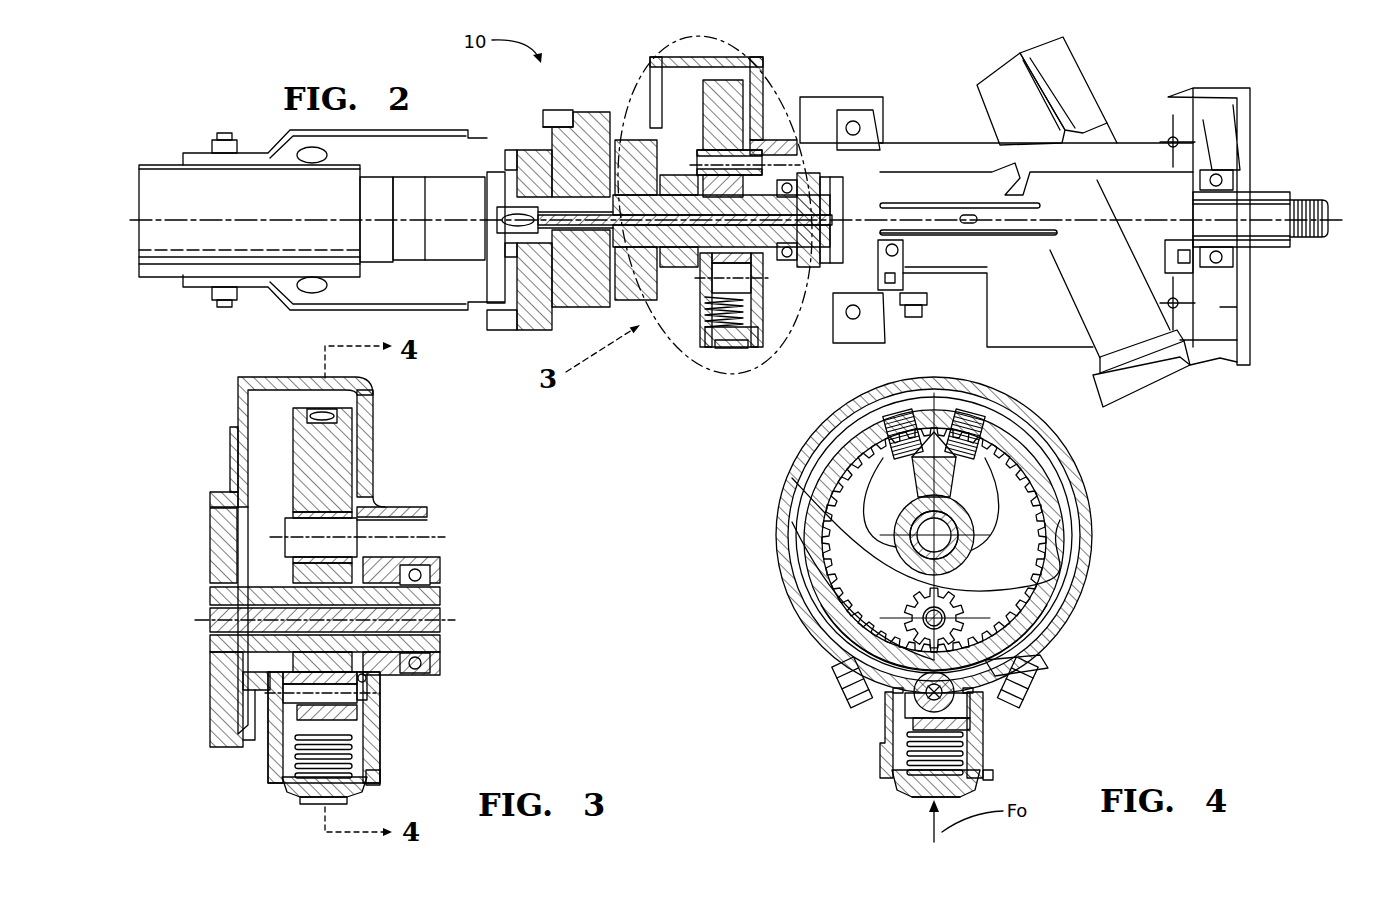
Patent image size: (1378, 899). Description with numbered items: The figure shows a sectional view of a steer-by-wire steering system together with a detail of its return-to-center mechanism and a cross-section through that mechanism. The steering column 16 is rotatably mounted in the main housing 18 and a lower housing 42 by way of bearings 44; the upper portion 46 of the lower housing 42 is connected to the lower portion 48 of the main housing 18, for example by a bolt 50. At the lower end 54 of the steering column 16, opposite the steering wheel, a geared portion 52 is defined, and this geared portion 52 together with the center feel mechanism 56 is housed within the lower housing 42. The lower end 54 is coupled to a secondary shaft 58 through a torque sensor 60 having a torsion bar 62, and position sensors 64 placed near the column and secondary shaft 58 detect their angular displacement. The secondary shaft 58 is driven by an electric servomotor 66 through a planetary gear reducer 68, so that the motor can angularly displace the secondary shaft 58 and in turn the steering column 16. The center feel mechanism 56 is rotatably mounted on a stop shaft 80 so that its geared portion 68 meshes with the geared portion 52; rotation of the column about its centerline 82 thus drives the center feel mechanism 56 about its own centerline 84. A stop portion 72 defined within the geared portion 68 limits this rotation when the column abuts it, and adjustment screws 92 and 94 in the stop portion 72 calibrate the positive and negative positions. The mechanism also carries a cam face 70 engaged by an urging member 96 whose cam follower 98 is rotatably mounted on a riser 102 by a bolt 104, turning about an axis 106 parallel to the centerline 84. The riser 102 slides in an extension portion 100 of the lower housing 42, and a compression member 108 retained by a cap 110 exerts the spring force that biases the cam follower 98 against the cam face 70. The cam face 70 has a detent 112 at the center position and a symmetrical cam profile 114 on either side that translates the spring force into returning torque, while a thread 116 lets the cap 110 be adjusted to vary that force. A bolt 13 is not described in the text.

In FIG. 4, the bolt 13 is at (845, 695).
In FIG. 2, the steering column 16 is at (1300, 198).
In FIG. 3, the steering column 16 is at (215, 597).
In FIG. 4, the steering column 16 is at (945, 614).
In FIG. 2, the main housing 18 is at (960, 140).
In FIG. 2, the lower housing 42 is at (745, 60).
In FIG. 3, the lower housing 42 is at (238, 400).
In FIG. 2, the bearings 44 is at (790, 178).
In FIG. 2, the upper portion 46 is at (812, 172).
In FIG. 2, the lower portion 48 is at (833, 175).
In FIG. 2, the bolt 50 is at (893, 240).
In FIG. 2, the geared portion 52 is at (695, 250).
In FIG. 3, the geared portion 52 is at (290, 650).
In FIG. 4, the geared portion 52 is at (914, 690).
In FIG. 2, the lower end 54 is at (655, 262).
In FIG. 2, the center feel mechanism 56 is at (735, 95).
In FIG. 3, the center feel mechanism 56 is at (300, 430).
In FIG. 2, the secondary shaft 58 is at (560, 160).
In FIG. 2, the torque sensor 60 is at (605, 300).
In FIG. 2, the torsion bar 62 is at (598, 165).
In FIG. 2, the position sensors 64 is at (530, 320).
In FIG. 2, the electric servomotor 66 is at (262, 180).
In FIG. 2, the planetary gear reducer 68 is at (460, 185).
In FIG. 4, the planetary gear reducer 68 is at (830, 565).
In FIG. 4, the cam face 70 is at (1085, 470).
In FIG. 4, the stop portion 72 is at (850, 622).
In FIG. 2, the stop shaft 80 is at (700, 160).
In FIG. 3, the stop shaft 80 is at (290, 540).
In FIG. 4, the stop shaft 80 is at (905, 525).
In FIG. 2, the centerline 82 is at (1262, 240).
In FIG. 3, the centerline 82 is at (432, 605).
In FIG. 4, the centerline 82 is at (905, 620).
In FIG. 2, the centerline 84 is at (727, 160).
In FIG. 3, the centerline 84 is at (427, 520).
In FIG. 4, the centerline 84 is at (912, 470).
In FIG. 4, the adjustment screw 92 is at (897, 410).
In FIG. 4, the adjustment screw 94 is at (971, 410).
In FIG. 2, the urging member 96 is at (748, 338).
In FIG. 3, the urging member 96 is at (264, 804).
In FIG. 4, the urging member 96 is at (886, 802).
In FIG. 3, the cam follower 98 is at (285, 702).
In FIG. 4, the cam follower 98 is at (885, 720).
In FIG. 3, the extension portion 100 is at (270, 762).
In FIG. 4, the extension portion 100 is at (882, 770).
In FIG. 3, the riser 102 is at (356, 712).
In FIG. 4, the riser 102 is at (985, 724).
In FIG. 3, the bolt 104 is at (365, 688).
In FIG. 3, the axis 106 is at (380, 693).
In FIG. 3, the compression member 108 is at (355, 742).
In FIG. 4, the compression member 108 is at (968, 748).
In FIG. 3, the cap 110 is at (345, 797).
In FIG. 4, the cap 110 is at (965, 796).
In FIG. 4, the detent 112 is at (1010, 660).
In FIG. 4, the cam profile 114 is at (812, 520).
In FIG. 3, the thread 116 is at (374, 778).
In FIG. 4, the thread 116 is at (993, 775).